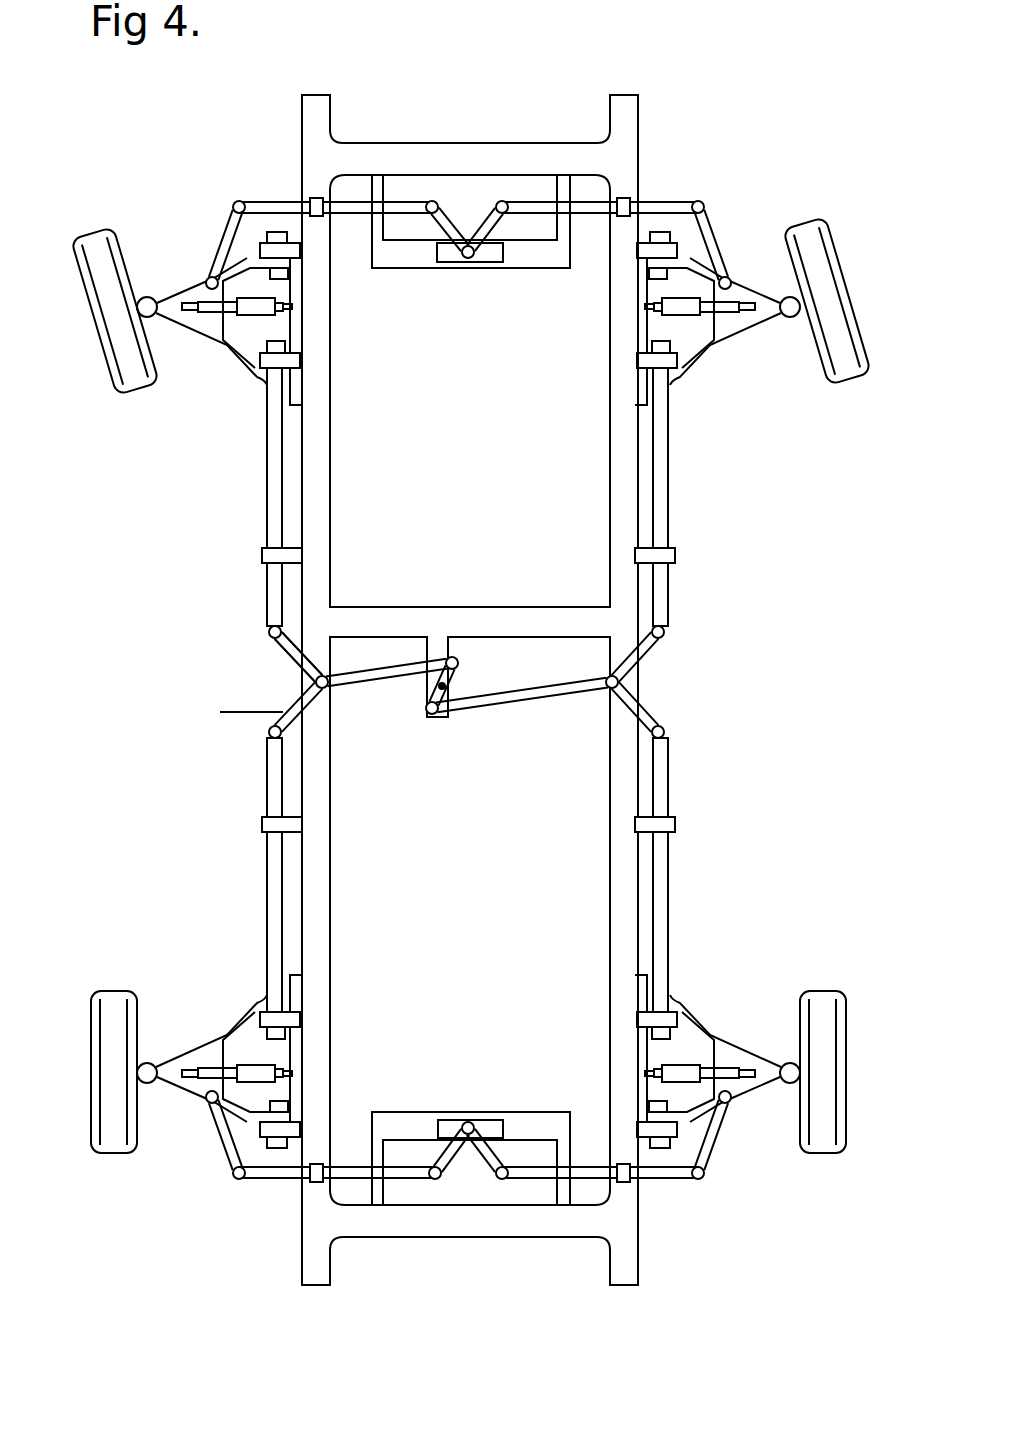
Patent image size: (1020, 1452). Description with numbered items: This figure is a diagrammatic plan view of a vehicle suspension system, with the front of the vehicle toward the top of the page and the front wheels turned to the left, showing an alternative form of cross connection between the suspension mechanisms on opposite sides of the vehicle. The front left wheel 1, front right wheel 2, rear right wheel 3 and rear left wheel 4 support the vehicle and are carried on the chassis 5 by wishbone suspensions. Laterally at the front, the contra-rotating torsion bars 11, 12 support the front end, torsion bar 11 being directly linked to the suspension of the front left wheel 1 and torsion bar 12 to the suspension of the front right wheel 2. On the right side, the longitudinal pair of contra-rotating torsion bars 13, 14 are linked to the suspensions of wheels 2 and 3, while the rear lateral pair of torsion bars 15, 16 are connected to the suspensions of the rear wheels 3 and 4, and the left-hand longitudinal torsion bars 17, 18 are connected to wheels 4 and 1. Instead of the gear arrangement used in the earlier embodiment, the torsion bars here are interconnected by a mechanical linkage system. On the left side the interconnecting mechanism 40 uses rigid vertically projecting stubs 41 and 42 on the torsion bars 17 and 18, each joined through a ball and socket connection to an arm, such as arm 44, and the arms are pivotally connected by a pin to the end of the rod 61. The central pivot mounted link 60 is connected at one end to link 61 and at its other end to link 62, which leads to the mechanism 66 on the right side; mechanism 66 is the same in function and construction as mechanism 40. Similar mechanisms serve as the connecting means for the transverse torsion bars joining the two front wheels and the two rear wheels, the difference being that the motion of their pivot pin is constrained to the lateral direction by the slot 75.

The front left wheel 1 is at (105, 270).
The front right wheel 2 is at (805, 243).
The rear right wheel 3 is at (825, 1160).
The rear left wheel 4 is at (112, 1158).
The chassis 5 is at (335, 578).
The torsion bar 11 is at (360, 198).
The torsion bar 12 is at (585, 198).
The torsion bar 13 is at (677, 502).
The torsion bar 14 is at (672, 798).
The torsion bar 15 is at (540, 1165).
The torsion bar 16 is at (350, 1165).
The torsion bar 17 is at (265, 908).
The torsion bar 18 is at (265, 502).
The interconnecting mechanism 40 is at (214, 679).
The stub 41 is at (270, 738).
The stub 42 is at (269, 630).
The arm 44 is at (272, 655).
The central pivot mounted link 60 is at (460, 680).
The link 61 is at (375, 688).
The link 62 is at (497, 707).
The interconnecting mechanism 66 is at (690, 679).
The slot 75 is at (487, 262).